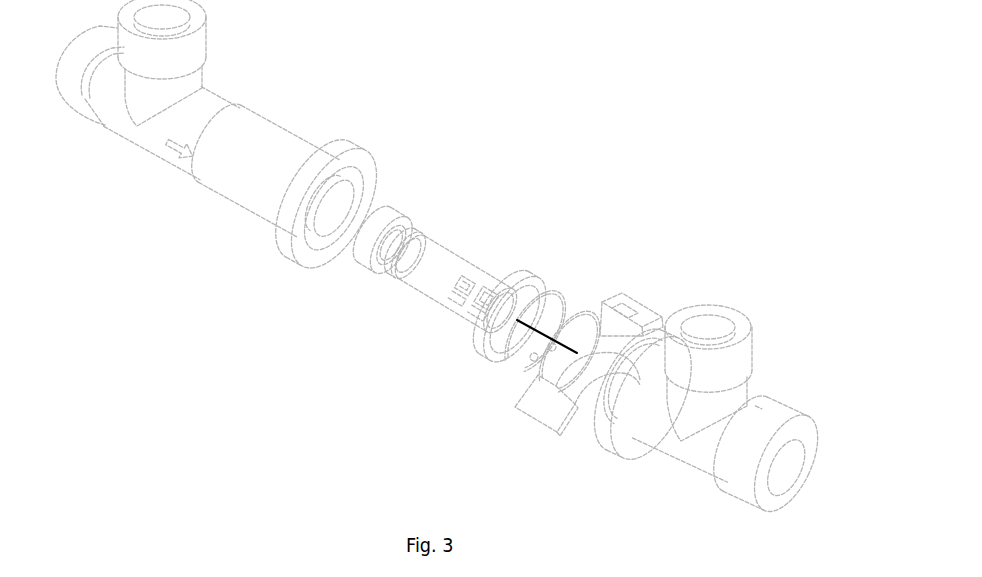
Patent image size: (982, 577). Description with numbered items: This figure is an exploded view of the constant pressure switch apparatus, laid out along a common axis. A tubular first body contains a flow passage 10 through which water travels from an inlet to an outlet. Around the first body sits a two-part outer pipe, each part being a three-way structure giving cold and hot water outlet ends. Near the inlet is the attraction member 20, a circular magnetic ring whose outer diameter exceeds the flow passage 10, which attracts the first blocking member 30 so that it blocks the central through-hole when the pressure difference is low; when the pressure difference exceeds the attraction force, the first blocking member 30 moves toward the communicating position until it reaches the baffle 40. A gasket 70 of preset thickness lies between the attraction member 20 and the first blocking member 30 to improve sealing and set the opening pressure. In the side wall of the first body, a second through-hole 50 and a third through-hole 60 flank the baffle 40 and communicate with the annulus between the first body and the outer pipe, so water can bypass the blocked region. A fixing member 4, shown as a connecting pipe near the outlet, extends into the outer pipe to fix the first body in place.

The flow passage 10 is at (306, 148).
The attraction member 20 is at (380, 241).
The gasket 70 is at (409, 261).
The first blocking member 30 is at (422, 255).
The second through-hole 50 is at (456, 291).
The baffle 40 is at (479, 297).
The third through-hole 60 is at (492, 301).
The fixing member 4 is at (509, 387).